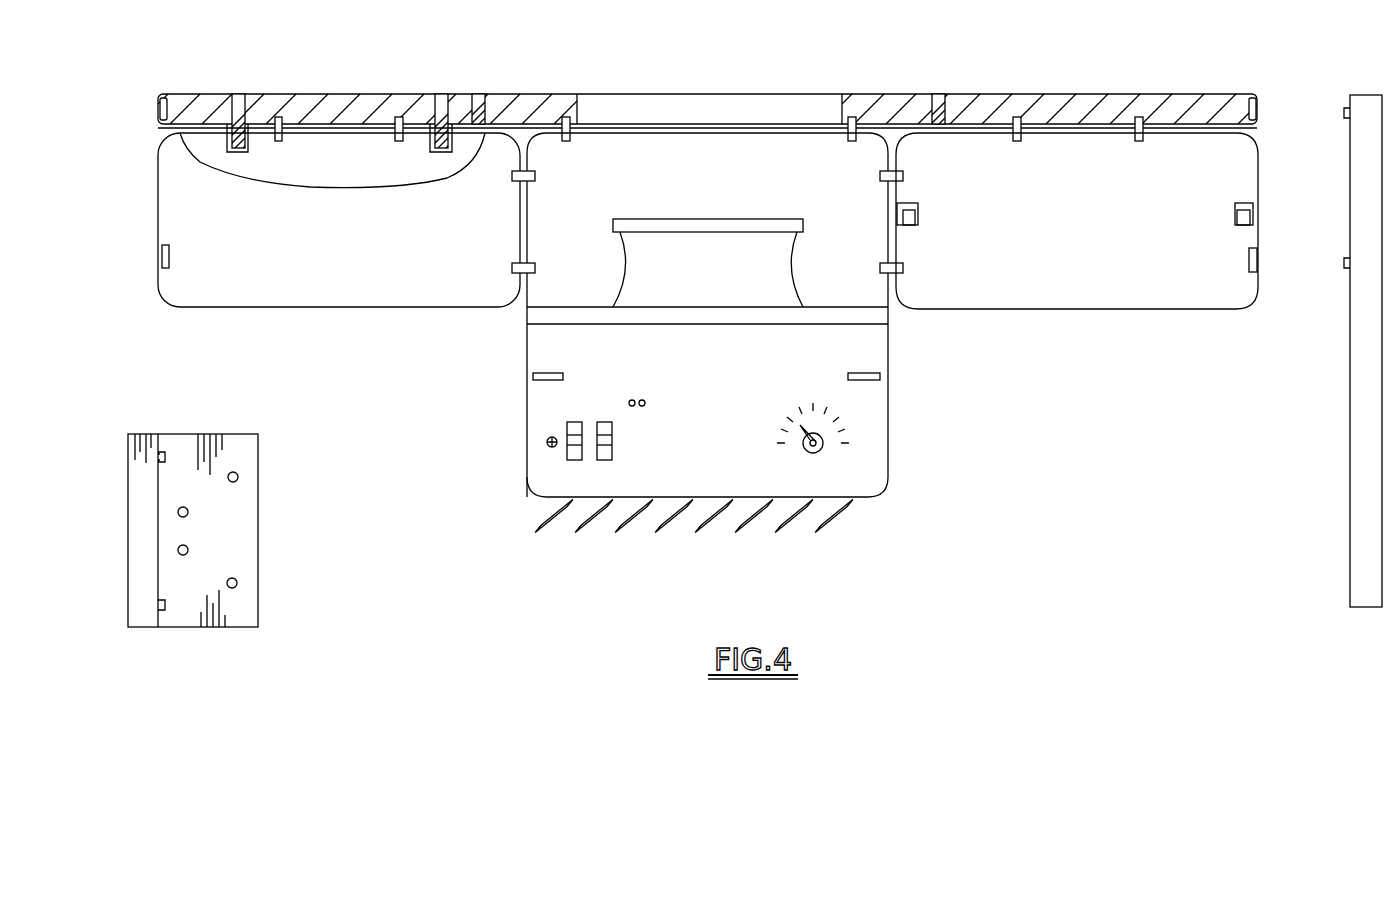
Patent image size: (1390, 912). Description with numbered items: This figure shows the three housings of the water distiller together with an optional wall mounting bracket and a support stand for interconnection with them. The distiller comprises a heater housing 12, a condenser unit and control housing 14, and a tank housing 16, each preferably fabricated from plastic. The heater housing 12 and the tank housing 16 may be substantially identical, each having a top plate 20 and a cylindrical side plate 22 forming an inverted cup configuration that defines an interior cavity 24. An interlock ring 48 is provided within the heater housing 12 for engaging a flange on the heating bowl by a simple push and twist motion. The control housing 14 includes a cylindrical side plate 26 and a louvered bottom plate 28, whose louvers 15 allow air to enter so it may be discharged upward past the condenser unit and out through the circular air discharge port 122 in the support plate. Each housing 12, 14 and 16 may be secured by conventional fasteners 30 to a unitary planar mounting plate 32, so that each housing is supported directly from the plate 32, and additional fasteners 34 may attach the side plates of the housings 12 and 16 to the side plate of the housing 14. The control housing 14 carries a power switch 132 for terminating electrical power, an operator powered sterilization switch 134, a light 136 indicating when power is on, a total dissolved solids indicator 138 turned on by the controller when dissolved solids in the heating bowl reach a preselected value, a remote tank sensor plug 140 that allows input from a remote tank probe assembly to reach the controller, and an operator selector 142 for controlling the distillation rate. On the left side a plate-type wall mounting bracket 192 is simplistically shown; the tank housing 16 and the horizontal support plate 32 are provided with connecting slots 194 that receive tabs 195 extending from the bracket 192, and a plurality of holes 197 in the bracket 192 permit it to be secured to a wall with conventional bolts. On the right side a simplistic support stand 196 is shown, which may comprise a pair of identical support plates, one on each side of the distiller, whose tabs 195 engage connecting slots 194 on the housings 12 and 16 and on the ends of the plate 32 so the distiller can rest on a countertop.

The heater housing 12 is at (1156, 300).
The condenser unit and control housing 14 is at (707, 315).
The louvers 15 is at (795, 528).
The tank housing 16 is at (339, 220).
The top plate 20 is at (1080, 128).
The cylindrical side plate 22 is at (1260, 153).
The interior cavity 24 is at (1066, 210).
The cylindrical side plate 26 is at (707, 343).
The louvered bottom plate 28 is at (530, 494).
The fasteners 30 is at (279, 117).
The mounting plate 32 is at (399, 117).
The fasteners 34 is at (903, 268).
The interlock ring 48 is at (1254, 210).
The air discharge port 122 is at (577, 102).
The power switch 132 is at (574, 460).
The sterilization switch 134 is at (613, 455).
The light 136 is at (632, 400).
The total dissolved solids indicator 138 is at (643, 406).
The remote tank sensor plug 140 is at (547, 442).
The operator selector 142 is at (816, 452).
The wall mounting bracket 192 is at (128, 537).
The connecting slots 194 is at (160, 100).
The tabs 195 is at (166, 455).
The support stand 196 is at (1352, 392).
The holes 197 is at (238, 476).